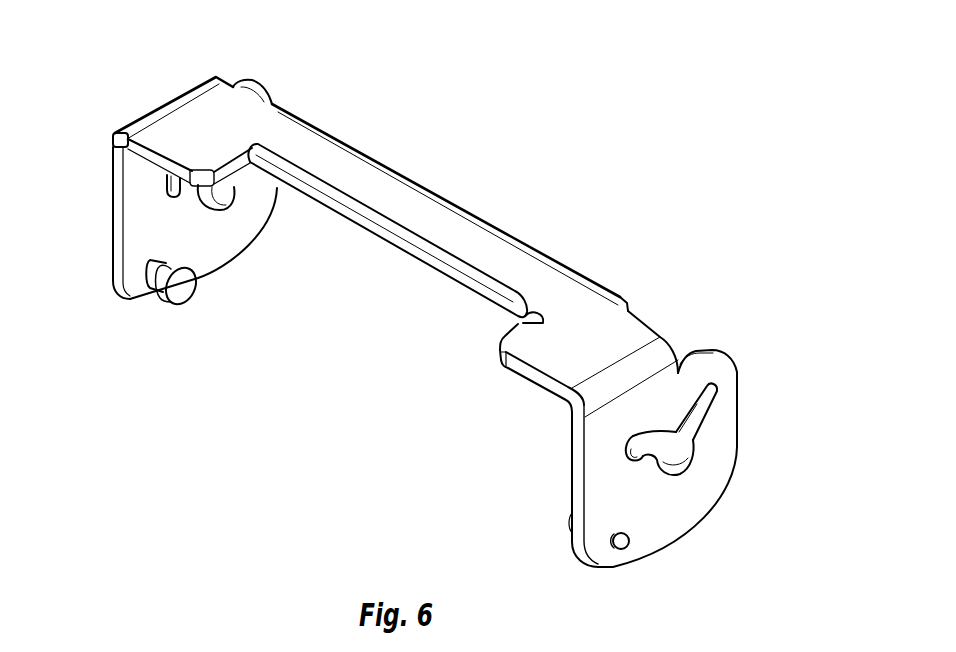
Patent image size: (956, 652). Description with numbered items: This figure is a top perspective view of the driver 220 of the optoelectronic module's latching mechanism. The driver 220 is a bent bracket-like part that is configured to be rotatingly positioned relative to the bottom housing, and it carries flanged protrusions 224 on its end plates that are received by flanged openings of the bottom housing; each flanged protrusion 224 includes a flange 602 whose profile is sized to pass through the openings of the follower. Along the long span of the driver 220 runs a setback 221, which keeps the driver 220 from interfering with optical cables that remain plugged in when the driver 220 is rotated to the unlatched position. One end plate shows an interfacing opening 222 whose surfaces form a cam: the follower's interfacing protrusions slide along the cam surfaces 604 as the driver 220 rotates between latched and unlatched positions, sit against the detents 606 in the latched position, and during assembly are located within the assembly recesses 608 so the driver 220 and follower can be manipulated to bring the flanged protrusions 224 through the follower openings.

The driver 220 is at (147, 48).
The setback 221 is at (387, 254).
The interfacing opening 222 is at (625, 434).
The flanged protrusion 224 is at (194, 304).
The flange 602 is at (150, 298).
The cam surface 604 is at (690, 462).
The detent 606 is at (648, 458).
The assembly recess 608 is at (714, 403).